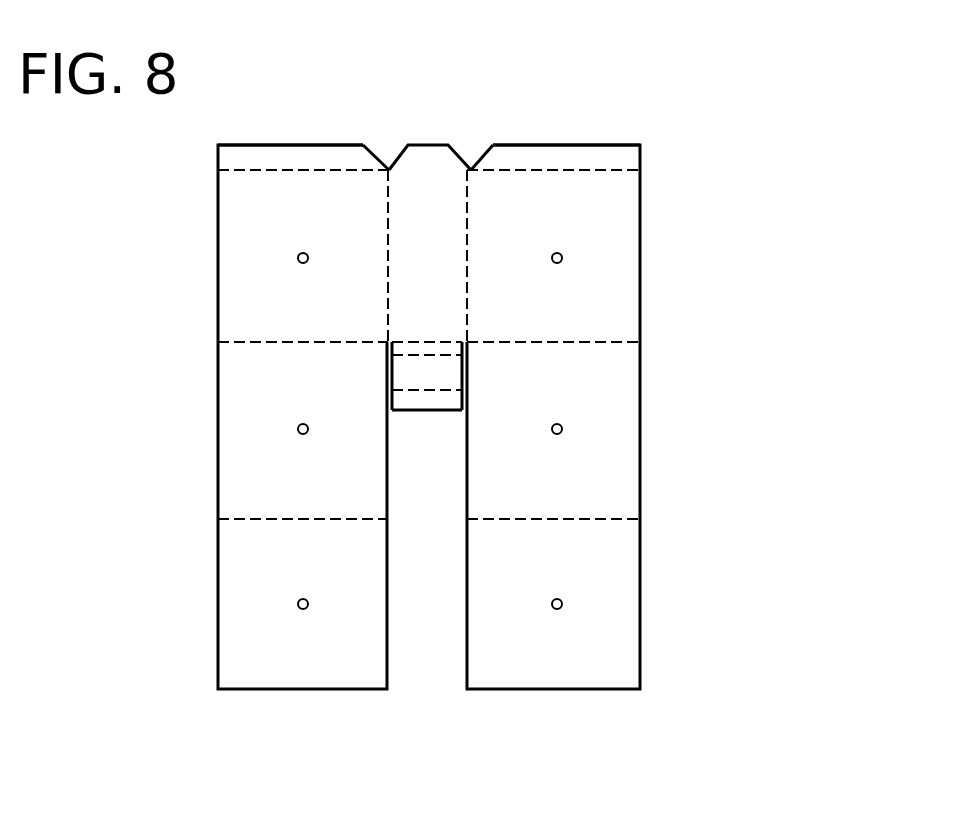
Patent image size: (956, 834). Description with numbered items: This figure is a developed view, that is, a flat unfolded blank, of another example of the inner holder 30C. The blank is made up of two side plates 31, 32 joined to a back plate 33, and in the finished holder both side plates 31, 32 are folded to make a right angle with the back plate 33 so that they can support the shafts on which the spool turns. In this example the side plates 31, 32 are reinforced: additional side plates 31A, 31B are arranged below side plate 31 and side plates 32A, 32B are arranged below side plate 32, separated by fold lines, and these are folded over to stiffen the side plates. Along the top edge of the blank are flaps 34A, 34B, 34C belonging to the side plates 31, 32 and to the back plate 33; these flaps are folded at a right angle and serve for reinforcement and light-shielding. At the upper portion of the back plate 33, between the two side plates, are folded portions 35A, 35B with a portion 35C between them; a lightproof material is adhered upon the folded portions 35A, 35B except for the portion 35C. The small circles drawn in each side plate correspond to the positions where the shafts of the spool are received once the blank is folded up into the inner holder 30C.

The inner holder 30C is at (557, 692).
The side plate 31 is at (622, 242).
The side plate 31A is at (620, 436).
The side plate 31B is at (617, 607).
The side plate 32 is at (217, 238).
The side plate 32A is at (217, 437).
The side plate 32B is at (217, 588).
The back plate 33 is at (452, 188).
The flap 34A is at (571, 145).
The flap 34B is at (288, 145).
The flap 34C is at (413, 145).
The folded portion 35A is at (405, 344).
The folded portion 35B is at (418, 373).
The portion 35C is at (452, 398).